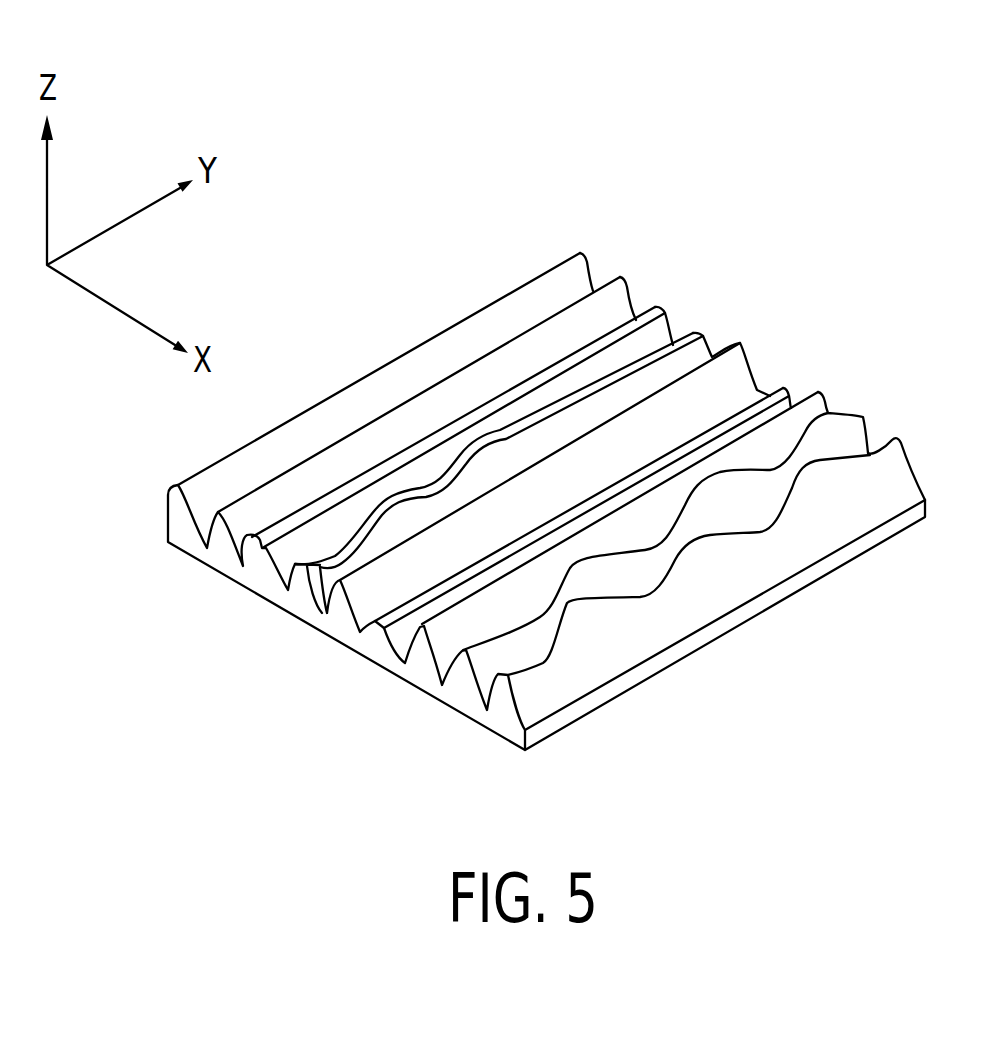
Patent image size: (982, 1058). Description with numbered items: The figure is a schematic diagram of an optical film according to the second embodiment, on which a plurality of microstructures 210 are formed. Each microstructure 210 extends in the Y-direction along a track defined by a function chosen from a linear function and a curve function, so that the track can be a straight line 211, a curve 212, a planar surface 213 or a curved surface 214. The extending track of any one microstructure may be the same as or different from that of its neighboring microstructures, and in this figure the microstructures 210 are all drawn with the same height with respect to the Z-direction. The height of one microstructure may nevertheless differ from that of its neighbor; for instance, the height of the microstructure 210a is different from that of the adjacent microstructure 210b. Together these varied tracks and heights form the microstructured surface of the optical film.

The microstructure 210 is at (869, 410).
The microstructure 210a is at (789, 386).
The microstructure 210b is at (743, 343).
The straight line 211 is at (541, 274).
The curve 212 is at (683, 570).
The planar surface 213 is at (218, 560).
The curved surface 214 is at (320, 603).